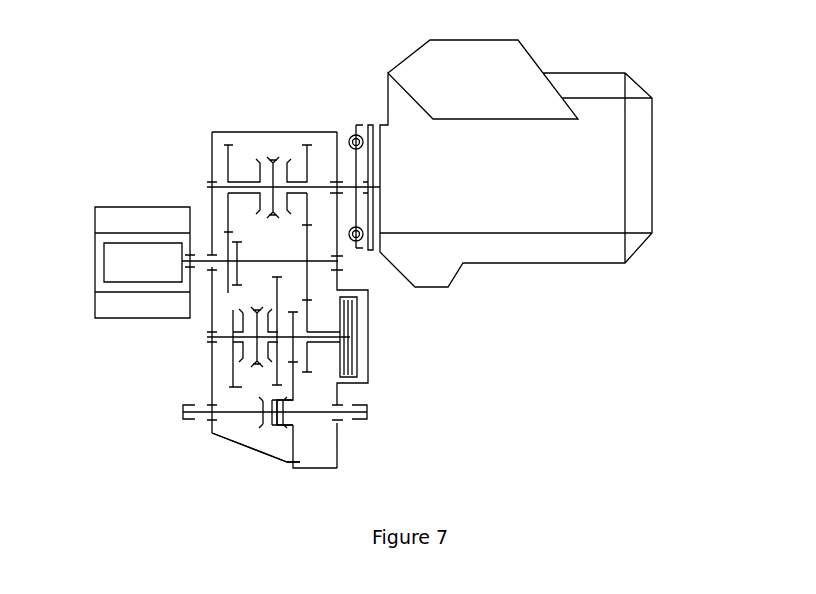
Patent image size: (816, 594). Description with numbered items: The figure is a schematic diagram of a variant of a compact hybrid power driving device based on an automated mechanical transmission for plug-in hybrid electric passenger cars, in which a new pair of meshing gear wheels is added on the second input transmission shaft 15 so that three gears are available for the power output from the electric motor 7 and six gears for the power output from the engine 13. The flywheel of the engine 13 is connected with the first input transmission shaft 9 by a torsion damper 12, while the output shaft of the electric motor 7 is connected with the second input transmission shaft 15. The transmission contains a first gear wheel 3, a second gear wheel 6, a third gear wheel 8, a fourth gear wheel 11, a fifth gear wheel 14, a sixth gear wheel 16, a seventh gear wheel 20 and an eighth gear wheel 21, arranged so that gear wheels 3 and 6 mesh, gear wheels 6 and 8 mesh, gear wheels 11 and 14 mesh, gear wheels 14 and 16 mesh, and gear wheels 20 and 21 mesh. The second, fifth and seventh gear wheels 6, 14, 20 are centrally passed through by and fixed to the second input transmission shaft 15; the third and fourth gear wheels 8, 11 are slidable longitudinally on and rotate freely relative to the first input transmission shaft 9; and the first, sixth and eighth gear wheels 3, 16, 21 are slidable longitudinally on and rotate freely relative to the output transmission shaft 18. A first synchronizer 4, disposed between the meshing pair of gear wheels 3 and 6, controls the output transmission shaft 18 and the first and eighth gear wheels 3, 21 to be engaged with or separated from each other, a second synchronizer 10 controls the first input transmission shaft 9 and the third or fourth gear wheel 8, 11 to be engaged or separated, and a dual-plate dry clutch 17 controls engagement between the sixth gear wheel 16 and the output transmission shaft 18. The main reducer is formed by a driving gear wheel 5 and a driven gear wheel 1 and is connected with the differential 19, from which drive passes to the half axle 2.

The driven gear wheel of main reducer 1 is at (288, 462).
The half axle 2 is at (210, 413).
The first gear wheel 3 is at (233, 389).
The first synchronizer 4 is at (254, 361).
The driving gear wheel of main reducer 5 is at (292, 313).
The second gear wheel 6 is at (228, 293).
The electric motor 7 is at (133, 267).
The third gear wheel 8 is at (228, 205).
The first input transmission shaft 9 is at (212, 181).
The second synchronizer 10 is at (268, 161).
The fourth gear wheel 11 is at (307, 150).
The torsion damper 12 is at (351, 138).
The engine 13 is at (440, 154).
The fifth gear wheel 14 is at (307, 244).
The second input transmission shaft 15 is at (321, 262).
The sixth gear wheel 16 is at (343, 320).
The dual-plate dry clutch 17 is at (345, 331).
The output transmission shaft 18 is at (345, 338).
The differential 19 is at (283, 413).
The seventh gear wheel 20 is at (341, 296).
The eighth gear wheel 21 is at (336, 393).